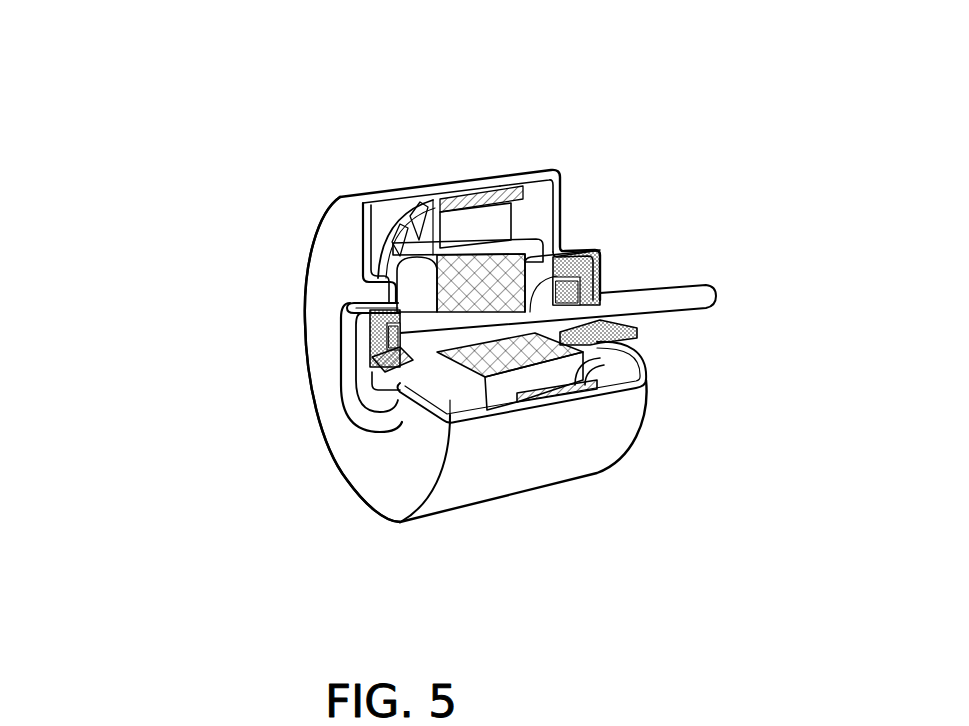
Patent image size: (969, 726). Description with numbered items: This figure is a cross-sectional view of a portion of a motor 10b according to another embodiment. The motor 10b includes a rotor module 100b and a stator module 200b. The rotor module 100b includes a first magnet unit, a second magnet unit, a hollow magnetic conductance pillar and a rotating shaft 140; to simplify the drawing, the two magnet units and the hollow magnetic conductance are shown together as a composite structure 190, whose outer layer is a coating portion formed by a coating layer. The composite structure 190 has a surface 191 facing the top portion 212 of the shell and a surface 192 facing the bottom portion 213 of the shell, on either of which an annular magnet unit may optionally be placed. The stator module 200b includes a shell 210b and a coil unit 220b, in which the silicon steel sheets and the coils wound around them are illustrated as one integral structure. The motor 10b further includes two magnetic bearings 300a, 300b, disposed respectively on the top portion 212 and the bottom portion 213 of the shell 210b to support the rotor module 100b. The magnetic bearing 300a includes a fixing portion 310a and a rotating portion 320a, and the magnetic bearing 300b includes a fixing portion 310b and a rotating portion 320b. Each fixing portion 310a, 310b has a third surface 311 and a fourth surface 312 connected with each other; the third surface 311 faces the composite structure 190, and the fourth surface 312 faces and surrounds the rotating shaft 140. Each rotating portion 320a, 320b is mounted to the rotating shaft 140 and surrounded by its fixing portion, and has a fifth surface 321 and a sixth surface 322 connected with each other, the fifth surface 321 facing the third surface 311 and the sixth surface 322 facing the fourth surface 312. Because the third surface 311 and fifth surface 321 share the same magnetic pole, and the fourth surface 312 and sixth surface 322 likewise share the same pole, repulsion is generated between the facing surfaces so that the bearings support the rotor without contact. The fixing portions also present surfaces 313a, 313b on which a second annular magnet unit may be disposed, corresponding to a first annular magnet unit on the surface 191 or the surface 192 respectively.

The motor 10b is at (712, 641).
The rotor module 100b is at (493, 429).
The rotating shaft 140 is at (478, 345).
The composite structure 190 is at (512, 352).
The surface of the composite structure facing the top portion 191 is at (440, 345).
The surface of the composite structure facing the bottom portion 192 is at (432, 184).
The stator module 200b is at (531, 161).
The shell 210b is at (493, 182).
The coil unit 220b is at (530, 238).
The top portion 212 is at (607, 249).
The bottom portion 213 is at (356, 447).
The magnetic bearing 300a is at (660, 404).
The fixing portion 310a is at (628, 368).
The rotating portion 320a is at (600, 403).
The magnetic bearing 300b is at (223, 392).
The fixing portion 310b is at (372, 353).
The rotating portion 320b is at (378, 376).
The third surface 311 is at (605, 277).
The fourth surface 312 is at (578, 254).
The surface of the fixing portion 313a is at (505, 225).
The surface of the fixing portion 313b is at (388, 308).
The fifth surface 321 is at (600, 335).
The sixth surface 322 is at (622, 292).